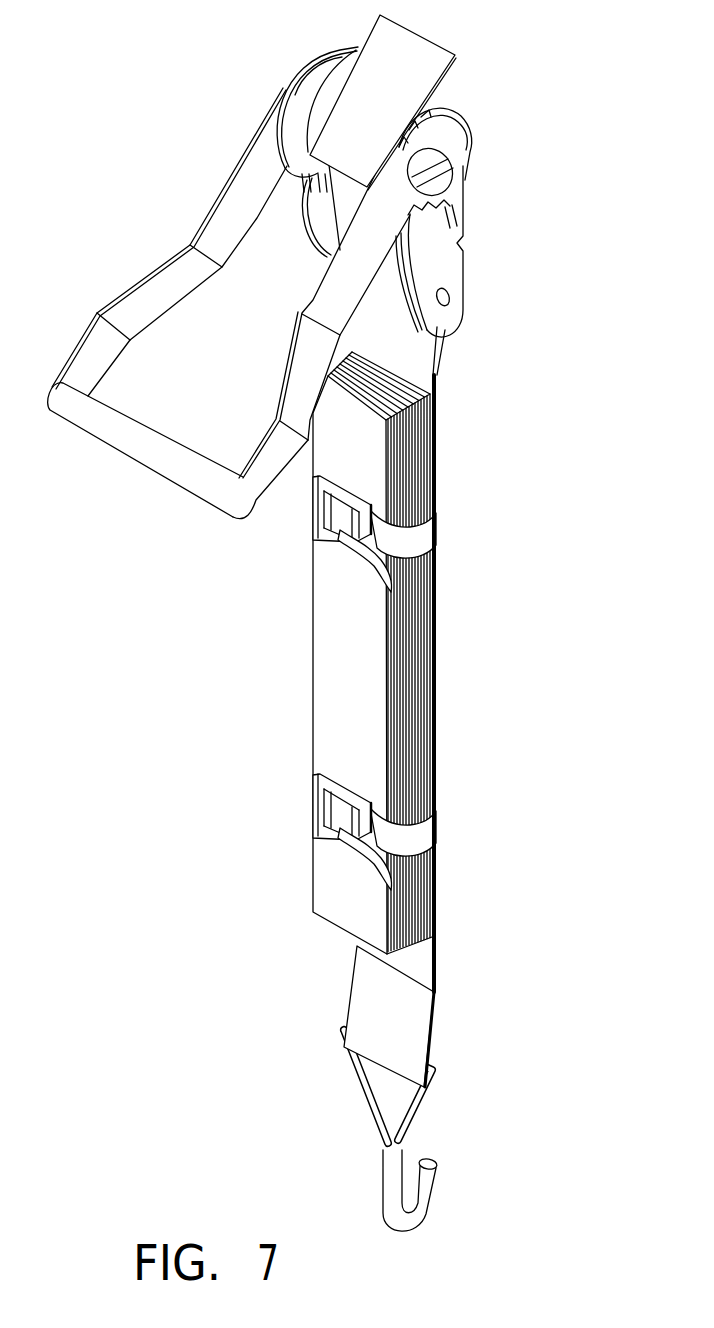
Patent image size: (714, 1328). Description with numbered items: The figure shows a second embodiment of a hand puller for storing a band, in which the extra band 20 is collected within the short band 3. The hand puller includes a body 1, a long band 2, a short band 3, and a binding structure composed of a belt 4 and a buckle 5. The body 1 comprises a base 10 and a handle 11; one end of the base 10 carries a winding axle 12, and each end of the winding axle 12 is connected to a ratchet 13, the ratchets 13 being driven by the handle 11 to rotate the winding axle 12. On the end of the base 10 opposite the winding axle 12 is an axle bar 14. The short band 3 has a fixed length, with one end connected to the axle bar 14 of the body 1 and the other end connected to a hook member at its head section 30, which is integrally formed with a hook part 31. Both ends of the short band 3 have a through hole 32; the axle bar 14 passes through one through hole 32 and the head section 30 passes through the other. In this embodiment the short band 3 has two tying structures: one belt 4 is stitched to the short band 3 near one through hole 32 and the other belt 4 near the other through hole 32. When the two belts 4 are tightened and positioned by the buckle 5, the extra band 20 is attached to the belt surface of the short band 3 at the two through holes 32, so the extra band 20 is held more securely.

The body 1 is at (478, 95).
The long band 2 is at (378, 63).
The short band 3 is at (421, 958).
The belt 4 is at (421, 538).
The buckle 5 is at (322, 537).
The base 10 is at (448, 268).
The handle 11 is at (224, 212).
The winding axle 12 is at (440, 148).
The ratchet 13 is at (293, 90).
The axle bar 14 is at (447, 300).
The extra band 20 is at (326, 673).
The head section 30 is at (421, 1112).
The hook part 31 is at (429, 1180).
The through hole 32 is at (435, 353).